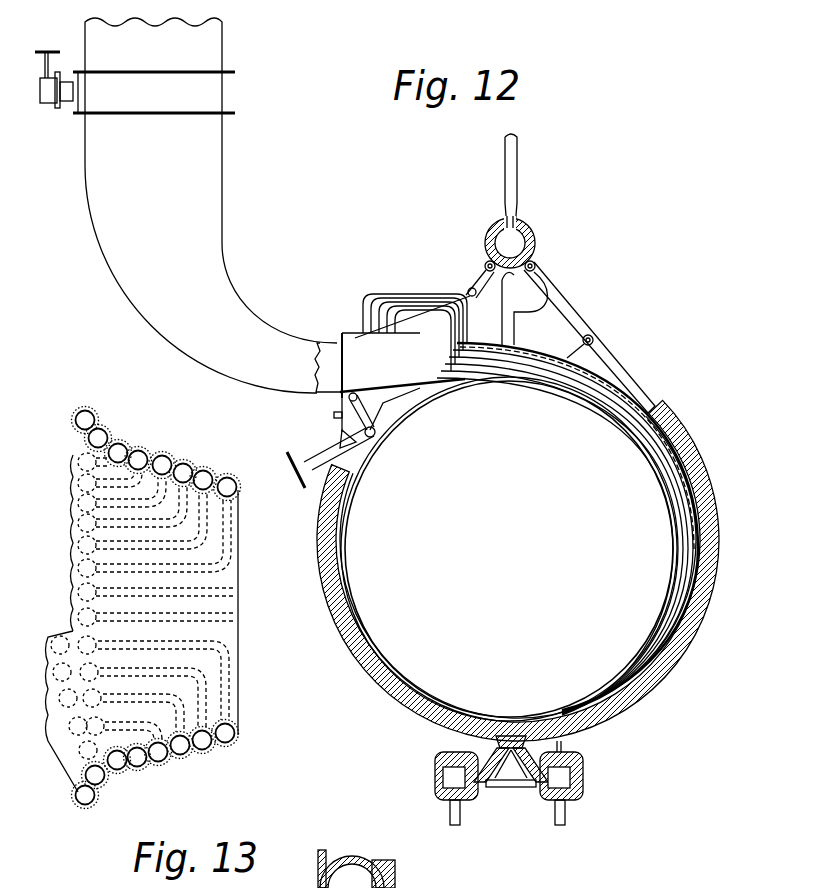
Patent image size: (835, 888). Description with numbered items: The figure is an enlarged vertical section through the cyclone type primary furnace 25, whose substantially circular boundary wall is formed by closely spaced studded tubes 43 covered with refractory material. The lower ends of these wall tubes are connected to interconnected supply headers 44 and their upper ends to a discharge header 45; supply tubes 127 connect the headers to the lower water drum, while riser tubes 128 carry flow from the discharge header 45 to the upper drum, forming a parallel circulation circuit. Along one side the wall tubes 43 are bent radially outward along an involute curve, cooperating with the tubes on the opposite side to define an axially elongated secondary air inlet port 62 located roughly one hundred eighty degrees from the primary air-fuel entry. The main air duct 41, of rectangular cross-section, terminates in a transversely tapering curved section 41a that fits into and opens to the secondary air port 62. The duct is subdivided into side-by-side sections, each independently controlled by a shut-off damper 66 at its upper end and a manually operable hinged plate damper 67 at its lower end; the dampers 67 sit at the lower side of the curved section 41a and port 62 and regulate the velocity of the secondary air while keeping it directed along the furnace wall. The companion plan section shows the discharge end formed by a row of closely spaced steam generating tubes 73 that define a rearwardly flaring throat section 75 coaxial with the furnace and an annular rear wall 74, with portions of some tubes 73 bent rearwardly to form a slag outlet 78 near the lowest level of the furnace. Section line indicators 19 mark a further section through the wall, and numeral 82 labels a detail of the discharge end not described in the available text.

In FIG. 12, the main air duct 41 is at (224, 164).
In FIG. 12, the transversely tapering curved section 41a is at (246, 298).
In FIG. 12, the shut-off damper 66 is at (72, 104).
In FIG. 12, the riser tubes 128 is at (518, 177).
In FIG. 12, the discharge header 45 is at (487, 243).
In FIG. 12, the secondary air inlet port 62 is at (479, 362).
In FIG. 12, the hinged plate damper 67 is at (418, 398).
In FIG. 12, the section line 19 is at (629, 452).
In FIG. 12, the cyclone type primary furnace 25 is at (540, 563).
In FIG. 12, the studded tubes 43 is at (532, 722).
In FIG. 12, the supply headers 44 is at (546, 803).
In FIG. 12, the supply tubes 127 is at (567, 816).
In FIG. 12, the annular rear wall 74 is at (100, 413).
In FIG. 12, the slag outlet 78 is at (138, 594).
In FIG. 12, the steam generating tubes 73 is at (78, 757).
In FIG. 12, the throat section 75 is at (200, 755).
In FIG. 13, the bearing 82 is at (332, 869).